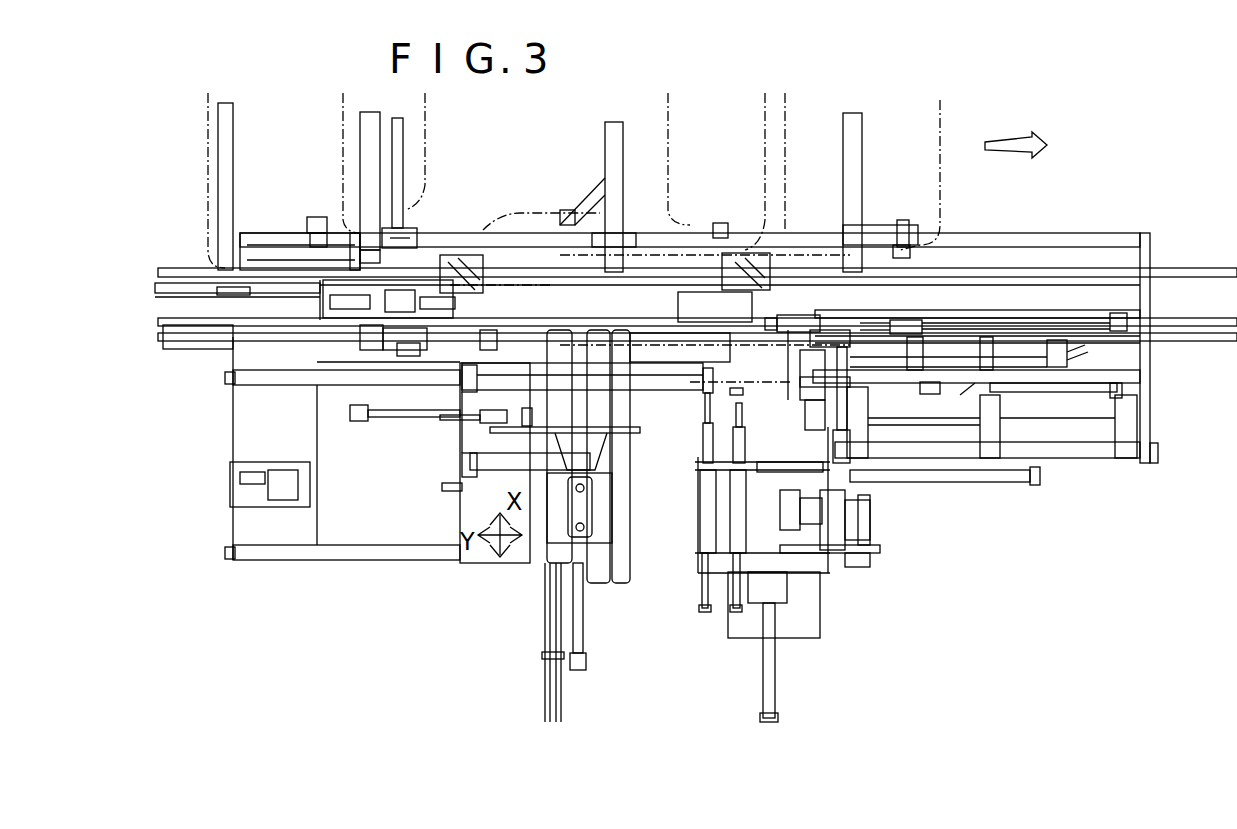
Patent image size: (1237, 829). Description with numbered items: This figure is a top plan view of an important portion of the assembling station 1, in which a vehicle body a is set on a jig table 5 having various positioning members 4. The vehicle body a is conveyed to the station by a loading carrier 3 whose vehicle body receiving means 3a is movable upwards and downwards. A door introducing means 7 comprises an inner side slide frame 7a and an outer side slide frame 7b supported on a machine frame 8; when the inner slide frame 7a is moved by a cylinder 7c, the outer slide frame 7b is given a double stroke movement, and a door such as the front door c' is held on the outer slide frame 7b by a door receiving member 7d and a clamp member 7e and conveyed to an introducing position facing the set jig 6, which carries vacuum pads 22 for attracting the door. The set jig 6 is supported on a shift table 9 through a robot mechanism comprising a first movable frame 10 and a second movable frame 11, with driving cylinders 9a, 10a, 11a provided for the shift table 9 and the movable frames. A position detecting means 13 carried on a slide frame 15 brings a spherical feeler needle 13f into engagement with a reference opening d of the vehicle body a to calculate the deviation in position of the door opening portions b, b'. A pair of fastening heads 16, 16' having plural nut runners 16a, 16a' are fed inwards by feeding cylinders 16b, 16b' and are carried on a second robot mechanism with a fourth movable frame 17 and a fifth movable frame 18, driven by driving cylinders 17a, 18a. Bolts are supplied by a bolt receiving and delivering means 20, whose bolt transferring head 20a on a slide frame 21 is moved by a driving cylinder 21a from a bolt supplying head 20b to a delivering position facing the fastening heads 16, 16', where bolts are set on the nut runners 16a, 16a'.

The assembling station 1 is at (517, 154).
The loading carrier 3 is at (325, 300).
The vehicle body receiving means 3a is at (455, 255).
The positioning member 4 is at (312, 217).
The jig table 5 is at (372, 147).
The set jig 6 is at (570, 500).
The door introducing means 7 is at (1052, 340).
The inner side slide frame 7a is at (715, 306).
The outer side slide frame 7b is at (478, 365).
The cylinder 7c is at (1030, 260).
The door receiving member 7d is at (860, 365).
The clamp member 7e is at (1040, 400).
The machine frame 8 is at (1148, 402).
The shift table 9 is at (475, 563).
The driving cylinder 9a is at (978, 482).
The first movable frame 10 is at (442, 485).
The driving cylinder 10a is at (375, 420).
The second movable frame 11 is at (612, 515).
The driving cylinder 11a is at (583, 640).
The position detecting means 13 is at (805, 385).
The spherical feeler needle 13f is at (785, 310).
The slide frame 15 is at (798, 318).
The fastening head 16 is at (735, 512).
The nut runner 16a is at (671, 444).
The nut runner 16a' is at (692, 430).
The feeding cylinder 16b is at (675, 585).
The feeding cylinder 16b' is at (701, 604).
The fastening head 16' is at (822, 550).
The fourth movable frame 17 is at (845, 563).
The driving cylinder 17a is at (775, 690).
The fifth movable frame 18 is at (770, 580).
The driving cylinder 18a is at (850, 522).
The bolt receiving and delivering means 20 is at (745, 388).
The bolt transferring head 20a is at (900, 320).
The bolt supplying head 20b is at (850, 420).
The slide frame 21 is at (920, 415).
The driving cylinder 21a is at (1092, 430).
The vacuum pad 22 is at (495, 430).
The vehicle body a is at (948, 188).
The door opening portion b is at (471, 189).
The door opening portion b' is at (659, 159).
The front door c' is at (909, 307).
The reference opening d is at (765, 200).